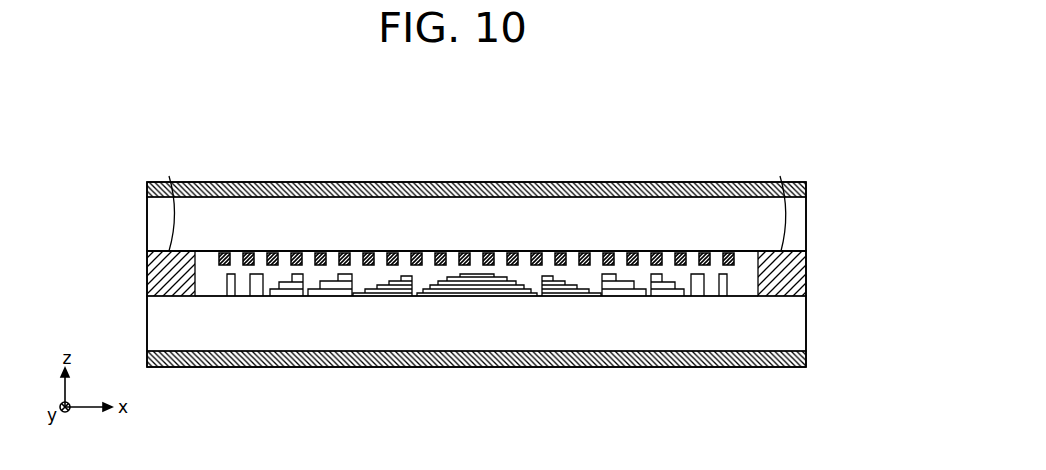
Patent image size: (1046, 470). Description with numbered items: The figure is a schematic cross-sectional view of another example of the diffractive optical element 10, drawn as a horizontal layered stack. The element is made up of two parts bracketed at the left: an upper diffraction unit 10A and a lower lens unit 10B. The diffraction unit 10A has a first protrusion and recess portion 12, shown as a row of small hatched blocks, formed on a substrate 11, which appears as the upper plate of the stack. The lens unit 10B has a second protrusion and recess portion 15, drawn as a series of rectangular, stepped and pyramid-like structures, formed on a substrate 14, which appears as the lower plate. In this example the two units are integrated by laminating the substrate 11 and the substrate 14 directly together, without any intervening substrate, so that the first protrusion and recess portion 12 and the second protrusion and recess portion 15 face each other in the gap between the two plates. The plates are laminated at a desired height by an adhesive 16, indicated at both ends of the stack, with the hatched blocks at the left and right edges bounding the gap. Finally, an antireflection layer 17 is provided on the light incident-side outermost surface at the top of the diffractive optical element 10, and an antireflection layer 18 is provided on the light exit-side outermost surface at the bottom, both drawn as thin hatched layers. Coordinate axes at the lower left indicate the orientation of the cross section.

The diffractive optical element 10 is at (86, 135).
The diffraction unit 10A is at (136, 184).
The lens unit 10B is at (136, 262).
The substrate 11 is at (806, 220).
The first protrusion and recess portion 12 is at (735, 247).
The substrate 14 is at (806, 323).
The second protrusion and recess portion 15 is at (220, 300).
The adhesive 16 is at (475, 199).
The antireflection layer 17 is at (806, 191).
The antireflection layer 18 is at (806, 358).